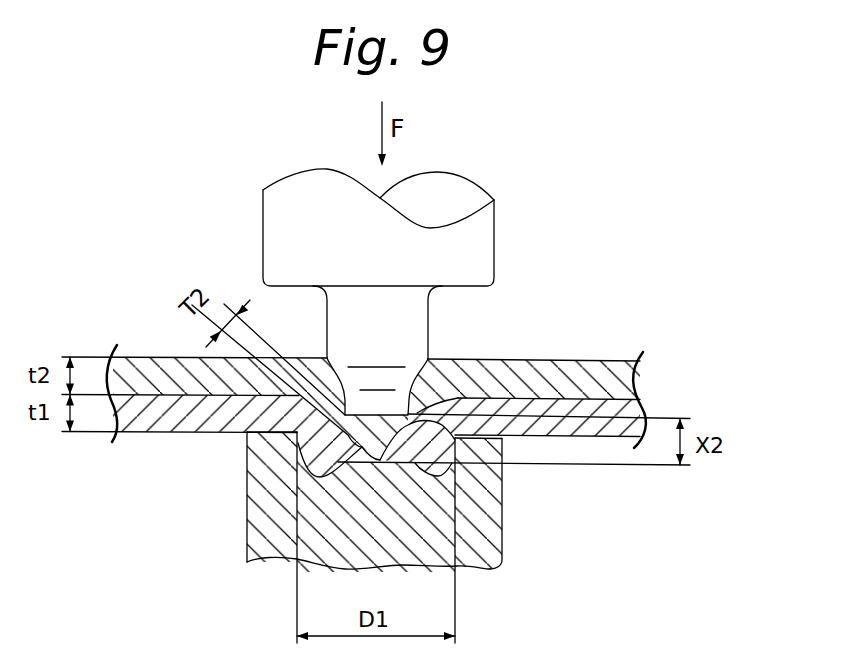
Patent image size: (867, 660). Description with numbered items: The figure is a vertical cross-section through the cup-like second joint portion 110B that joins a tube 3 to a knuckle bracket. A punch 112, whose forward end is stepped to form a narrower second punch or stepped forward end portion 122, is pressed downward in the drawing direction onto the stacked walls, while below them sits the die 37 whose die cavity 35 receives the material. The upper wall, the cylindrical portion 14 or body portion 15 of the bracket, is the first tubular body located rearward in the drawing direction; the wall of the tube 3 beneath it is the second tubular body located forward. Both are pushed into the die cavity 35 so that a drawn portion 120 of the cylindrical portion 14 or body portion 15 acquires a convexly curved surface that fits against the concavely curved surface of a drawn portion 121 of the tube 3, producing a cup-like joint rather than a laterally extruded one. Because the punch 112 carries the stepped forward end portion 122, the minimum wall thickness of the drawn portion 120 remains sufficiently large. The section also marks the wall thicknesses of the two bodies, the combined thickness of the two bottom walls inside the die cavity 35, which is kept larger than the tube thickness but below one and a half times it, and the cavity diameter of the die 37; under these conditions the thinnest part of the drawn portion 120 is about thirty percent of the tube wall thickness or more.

The punch 112 is at (467, 242).
The stepped forward end portion 122 is at (436, 330).
The second joint portion 110B is at (489, 292).
The cylindrical portion 14 is at (414, 382).
The body portion 15 is at (622, 385).
The tube 3 is at (380, 498).
The die cavity 35 is at (505, 465).
The die 37 is at (468, 537).
The drawn portion 120 is at (368, 425).
The drawn portion 121 is at (397, 425).